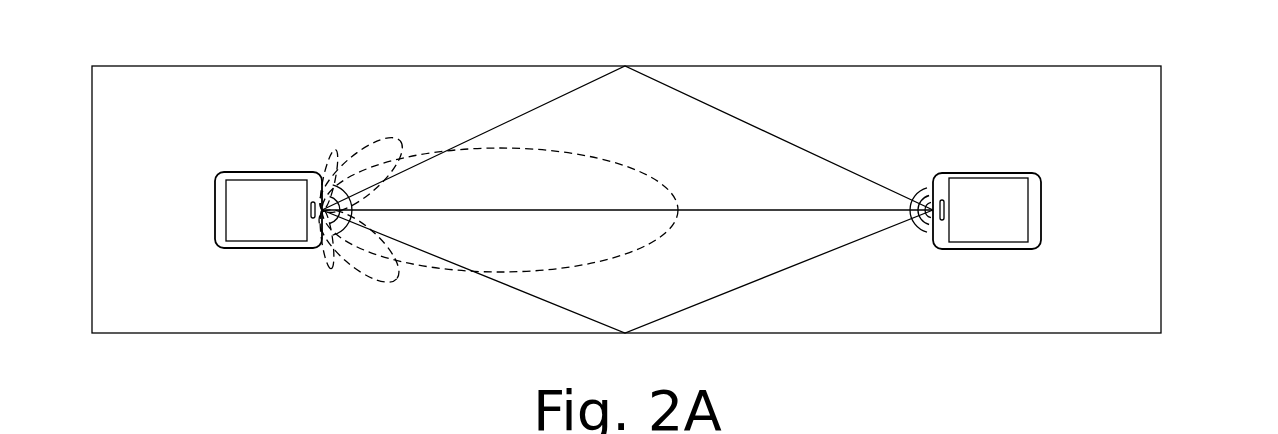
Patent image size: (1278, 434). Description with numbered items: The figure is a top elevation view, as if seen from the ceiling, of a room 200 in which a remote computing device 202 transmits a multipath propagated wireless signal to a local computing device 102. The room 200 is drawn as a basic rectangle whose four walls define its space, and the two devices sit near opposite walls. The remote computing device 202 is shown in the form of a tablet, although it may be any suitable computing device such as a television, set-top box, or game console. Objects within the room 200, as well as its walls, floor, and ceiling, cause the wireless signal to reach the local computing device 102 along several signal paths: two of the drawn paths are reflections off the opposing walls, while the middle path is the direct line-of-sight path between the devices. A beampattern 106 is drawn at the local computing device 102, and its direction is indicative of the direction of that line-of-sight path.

The room 200 is at (626, 199).
The local computing device 102 is at (268, 248).
The remote computing device 202 is at (957, 249).
The beampattern 106 is at (542, 147).